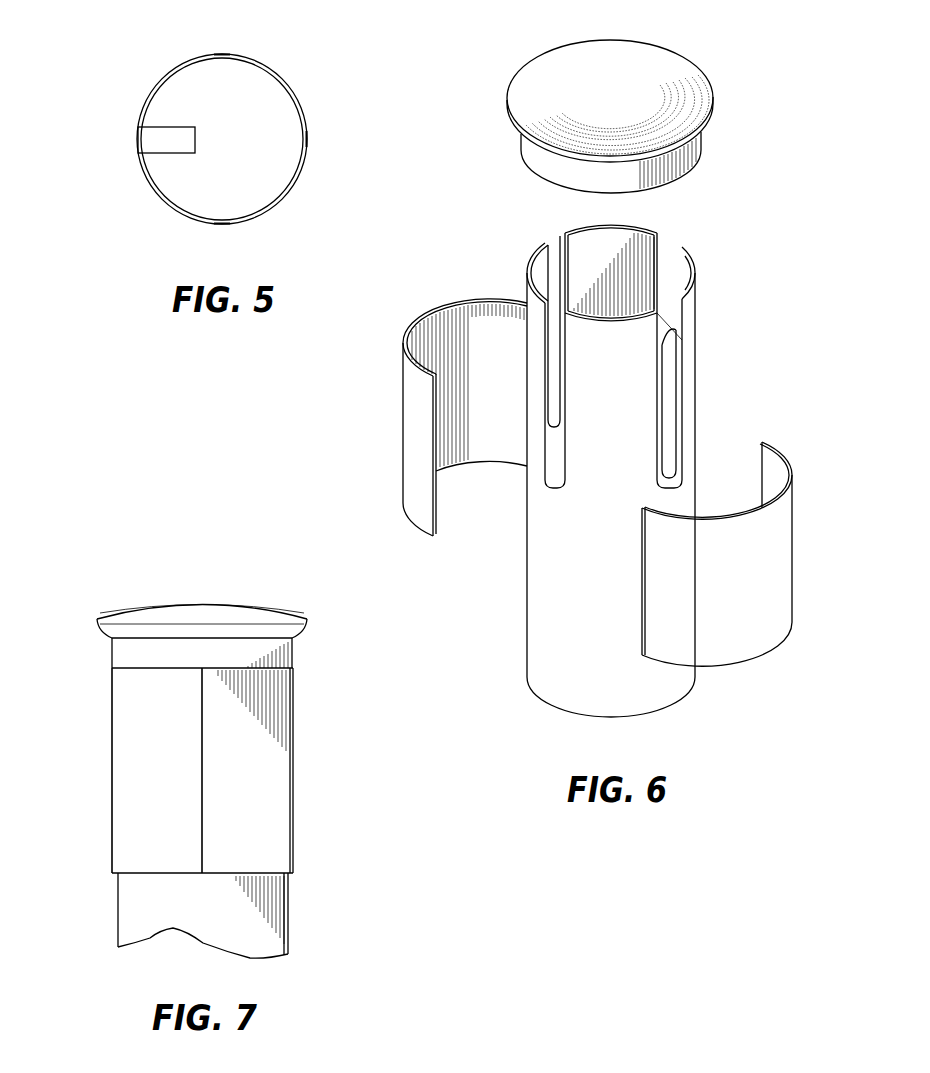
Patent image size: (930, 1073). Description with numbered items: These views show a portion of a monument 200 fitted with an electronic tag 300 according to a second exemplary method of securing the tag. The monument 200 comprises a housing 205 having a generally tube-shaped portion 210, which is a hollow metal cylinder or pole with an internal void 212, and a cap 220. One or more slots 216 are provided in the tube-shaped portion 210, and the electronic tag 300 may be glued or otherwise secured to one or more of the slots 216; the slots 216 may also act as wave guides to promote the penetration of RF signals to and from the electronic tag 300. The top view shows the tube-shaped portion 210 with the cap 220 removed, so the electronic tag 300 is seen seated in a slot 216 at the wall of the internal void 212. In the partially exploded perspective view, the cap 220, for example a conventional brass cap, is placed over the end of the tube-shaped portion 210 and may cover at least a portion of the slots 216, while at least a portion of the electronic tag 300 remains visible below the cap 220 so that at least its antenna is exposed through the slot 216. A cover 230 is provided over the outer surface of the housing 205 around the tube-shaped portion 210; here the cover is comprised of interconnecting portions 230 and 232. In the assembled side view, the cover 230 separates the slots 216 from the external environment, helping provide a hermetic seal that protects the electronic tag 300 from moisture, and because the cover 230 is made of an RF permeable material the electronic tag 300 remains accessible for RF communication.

In FIG. 6, the monument 200 is at (727, 60).
In FIG. 7, the monument 200 is at (312, 594).
In FIG. 6, the housing 205 is at (755, 142).
In FIG. 7, the housing 205 is at (329, 657).
In FIG. 5, the tube-shaped portion 210 is at (150, 94).
In FIG. 6, the tube-shaped portion 210 is at (540, 637).
In FIG. 7, the tube-shaped portion 210 is at (290, 900).
In FIG. 5, the internal void 212 is at (237, 112).
In FIG. 5, the slots 216 is at (222, 56).
In FIG. 6, the slots 216 is at (553, 243).
In FIG. 6, the cap 220 is at (557, 77).
In FIG. 7, the cap 220 is at (218, 598).
In FIG. 6, the cover 230 is at (408, 437).
In FIG. 7, the cover 230 is at (110, 775).
In FIG. 6, the cover portion 232 is at (732, 632).
In FIG. 7, the cover portion 232 is at (293, 793).
In FIG. 5, the electronic tag 300 is at (152, 140).
In FIG. 6, the electronic tag 300 is at (672, 402).